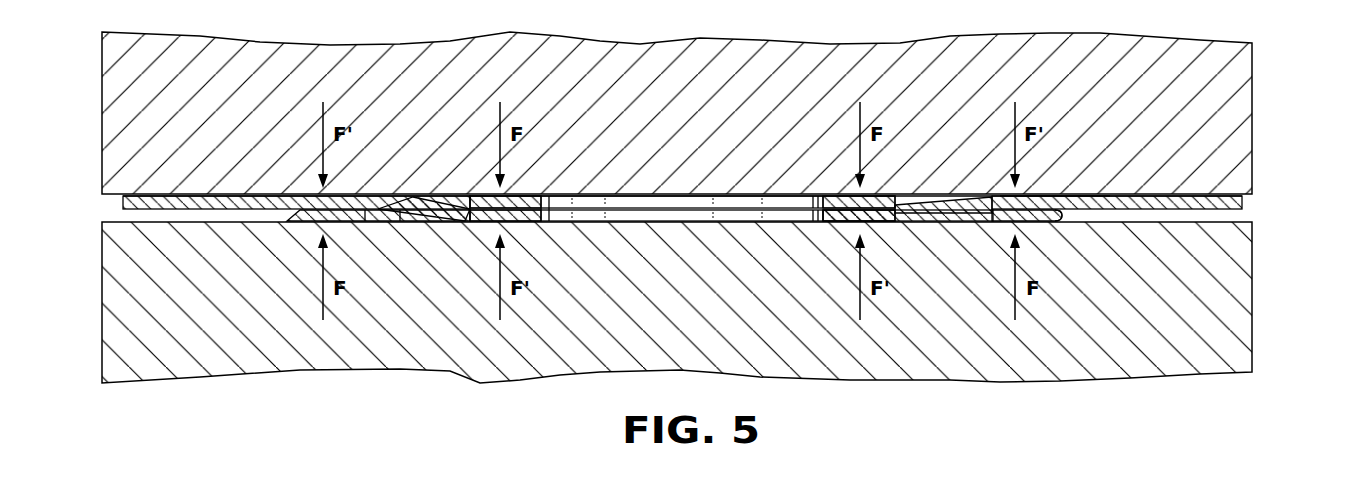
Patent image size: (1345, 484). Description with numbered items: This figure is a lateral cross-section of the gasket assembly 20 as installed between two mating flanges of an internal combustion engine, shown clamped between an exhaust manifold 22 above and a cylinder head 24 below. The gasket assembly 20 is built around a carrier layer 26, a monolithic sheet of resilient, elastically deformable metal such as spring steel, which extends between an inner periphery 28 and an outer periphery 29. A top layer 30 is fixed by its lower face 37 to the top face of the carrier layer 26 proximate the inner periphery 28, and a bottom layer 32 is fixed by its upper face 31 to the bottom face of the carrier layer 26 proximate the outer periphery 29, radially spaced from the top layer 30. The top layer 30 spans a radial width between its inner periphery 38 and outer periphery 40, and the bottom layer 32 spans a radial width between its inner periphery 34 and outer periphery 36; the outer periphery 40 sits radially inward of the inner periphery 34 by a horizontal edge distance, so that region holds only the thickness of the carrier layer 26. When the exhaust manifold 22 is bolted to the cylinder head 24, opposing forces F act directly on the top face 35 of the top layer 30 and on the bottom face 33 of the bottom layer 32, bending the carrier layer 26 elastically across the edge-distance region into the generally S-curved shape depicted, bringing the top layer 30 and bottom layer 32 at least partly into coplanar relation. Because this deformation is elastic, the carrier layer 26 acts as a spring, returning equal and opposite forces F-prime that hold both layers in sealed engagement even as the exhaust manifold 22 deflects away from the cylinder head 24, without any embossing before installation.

The gasket assembly 20 is at (719, 237).
The exhaust manifold 22 is at (665, 150).
The cylinder head 24 is at (665, 272).
The carrier layer 26 is at (245, 194).
The inner periphery 28 is at (546, 215).
The outer periphery 29 is at (1245, 202).
The top layer 30 is at (898, 200).
The upper face of bottom layer 31 is at (1053, 184).
The bottom layer 32 is at (297, 214).
The bottom face of bottom layer 33 is at (1053, 233).
The inner periphery of bottom layer 34 is at (990, 222).
The top face of top layer 35 is at (836, 186).
The outer periphery of bottom layer 36 is at (1064, 215).
The lower face of top layer 37 is at (838, 230).
The inner periphery of top layer 38 is at (541, 198).
The outer periphery of top layer 40 is at (465, 205).